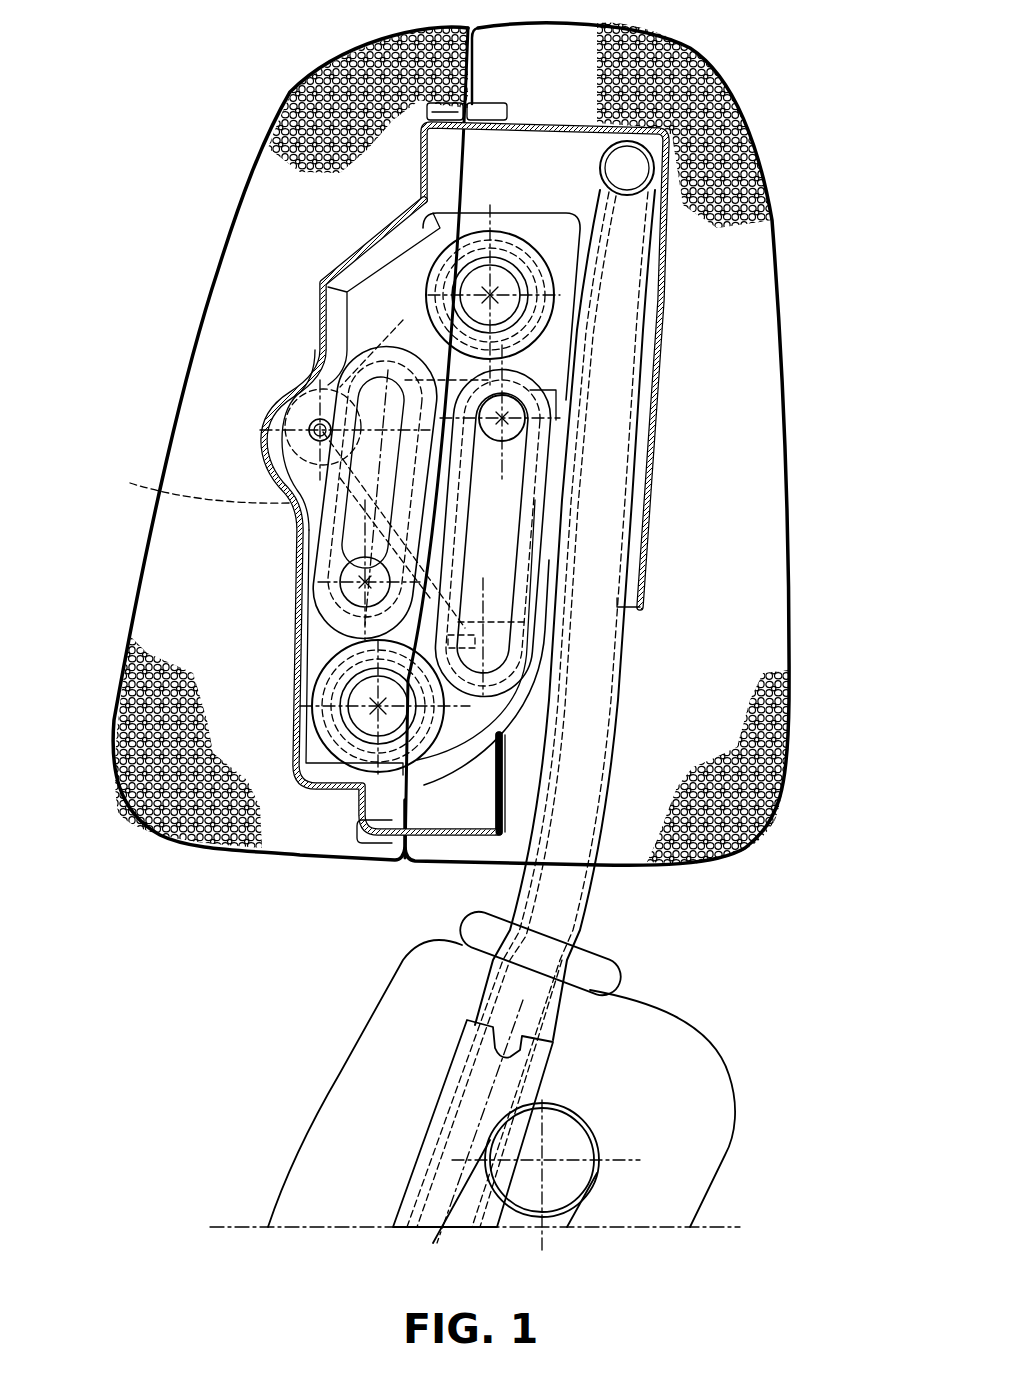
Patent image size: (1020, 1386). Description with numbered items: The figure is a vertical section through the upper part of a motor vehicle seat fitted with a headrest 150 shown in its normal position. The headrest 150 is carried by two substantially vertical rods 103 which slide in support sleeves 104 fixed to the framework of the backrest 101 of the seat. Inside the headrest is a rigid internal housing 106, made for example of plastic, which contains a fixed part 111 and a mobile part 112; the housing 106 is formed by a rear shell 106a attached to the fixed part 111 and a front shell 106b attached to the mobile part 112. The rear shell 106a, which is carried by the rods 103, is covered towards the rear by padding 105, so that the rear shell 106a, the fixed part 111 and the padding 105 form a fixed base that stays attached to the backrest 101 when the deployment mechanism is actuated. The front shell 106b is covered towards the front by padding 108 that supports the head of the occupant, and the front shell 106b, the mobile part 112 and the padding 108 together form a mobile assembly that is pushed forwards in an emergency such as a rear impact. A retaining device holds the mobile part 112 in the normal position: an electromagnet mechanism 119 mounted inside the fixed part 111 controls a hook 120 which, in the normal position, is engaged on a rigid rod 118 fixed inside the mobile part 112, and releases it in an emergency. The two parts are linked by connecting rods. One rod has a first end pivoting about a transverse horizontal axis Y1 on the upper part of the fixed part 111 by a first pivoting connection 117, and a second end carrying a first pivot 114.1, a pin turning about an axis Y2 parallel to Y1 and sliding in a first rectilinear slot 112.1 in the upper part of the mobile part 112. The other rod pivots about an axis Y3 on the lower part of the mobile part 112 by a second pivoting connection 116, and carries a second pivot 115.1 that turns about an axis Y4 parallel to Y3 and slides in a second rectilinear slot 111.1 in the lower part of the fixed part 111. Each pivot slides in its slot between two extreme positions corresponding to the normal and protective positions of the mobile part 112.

The headrest 150 is at (145, 233).
The backrest 101 is at (683, 1077).
The rods 103 is at (557, 913).
The support sleeves 104 is at (513, 1080).
The padding 105 is at (715, 82).
The rigid internal housing 106 is at (456, 473).
The rear shell 106a is at (660, 387).
The front shell 106b is at (287, 587).
The padding 108 is at (313, 123).
The fixed part 111 is at (636, 463).
The second rectilinear slot 111.1 is at (517, 548).
The mobile part 112 is at (306, 484).
The first rectilinear slot 112.1 is at (338, 538).
The first pivot 114.1 is at (315, 510).
The second pivot 115.1 is at (582, 521).
The second pivoting connection 116 is at (379, 784).
The first pivoting connection 117 is at (553, 280).
The rigid rod 118 is at (313, 421).
The electromagnet mechanism 119 is at (272, 474).
The hook 120 is at (287, 445).
The transverse horizontal axis Y1 is at (490, 295).
The axis of first pivot Y2 is at (365, 582).
The axis of second pivoting connection Y3 is at (378, 706).
The axis of second pivot Y4 is at (502, 418).